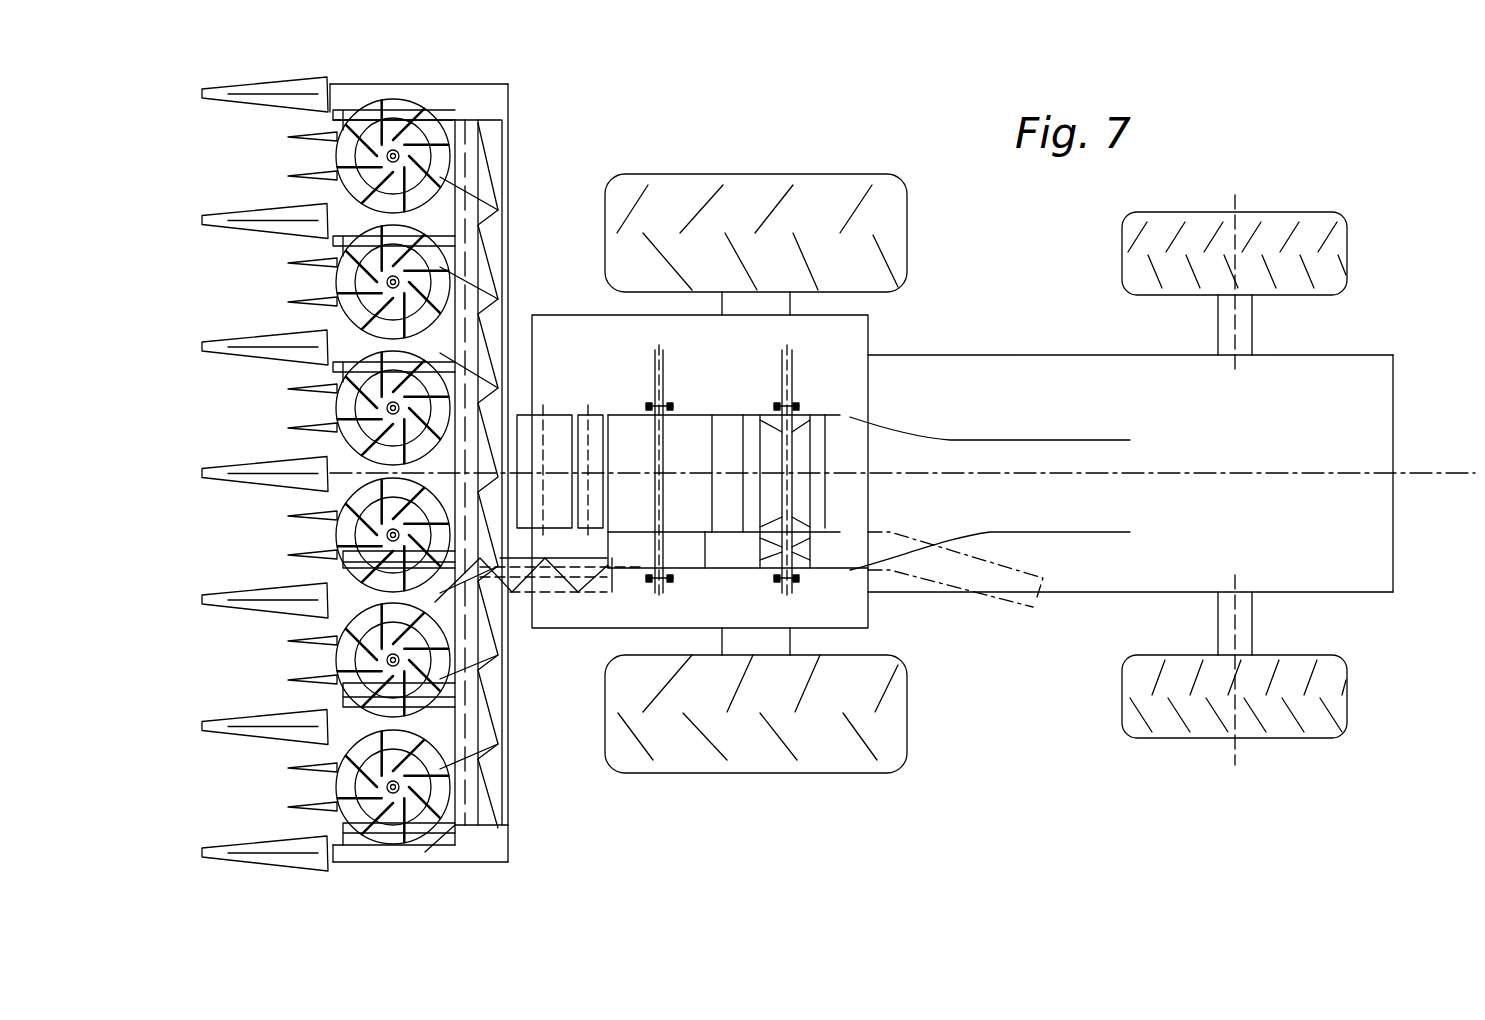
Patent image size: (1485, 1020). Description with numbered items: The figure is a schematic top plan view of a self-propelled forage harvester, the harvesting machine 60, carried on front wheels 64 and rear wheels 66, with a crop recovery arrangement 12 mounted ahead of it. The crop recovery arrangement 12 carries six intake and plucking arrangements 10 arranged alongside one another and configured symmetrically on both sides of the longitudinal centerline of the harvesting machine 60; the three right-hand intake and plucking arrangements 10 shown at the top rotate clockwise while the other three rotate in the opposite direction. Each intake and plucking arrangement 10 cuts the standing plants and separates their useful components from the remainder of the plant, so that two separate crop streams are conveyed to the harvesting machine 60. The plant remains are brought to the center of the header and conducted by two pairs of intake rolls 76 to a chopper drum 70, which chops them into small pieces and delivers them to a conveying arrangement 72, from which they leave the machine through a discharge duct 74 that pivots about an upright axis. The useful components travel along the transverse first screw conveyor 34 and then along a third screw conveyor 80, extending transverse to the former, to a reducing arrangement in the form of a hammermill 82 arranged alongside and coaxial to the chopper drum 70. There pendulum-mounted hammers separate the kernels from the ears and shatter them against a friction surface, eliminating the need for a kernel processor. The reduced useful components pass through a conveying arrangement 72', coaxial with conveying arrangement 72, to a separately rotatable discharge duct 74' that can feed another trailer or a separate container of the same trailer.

The intake and plucking arrangement 10 is at (244, 160).
The crop recovery arrangement 12 is at (540, 834).
The first screw conveyor 34 is at (443, 770).
The harvesting machine 60 is at (1035, 768).
The front wheels 64 is at (833, 755).
The rear wheels 66 is at (1318, 725).
The chopper drum 70 is at (623, 427).
The conveying arrangement 72 is at (859, 407).
The conveying arrangement 72' is at (848, 591).
The discharge duct 74 is at (990, 429).
The discharge duct 74' is at (962, 612).
The intake rolls 76 is at (573, 423).
The third screw conveyor 80 is at (547, 583).
The hammermill 82 is at (638, 555).